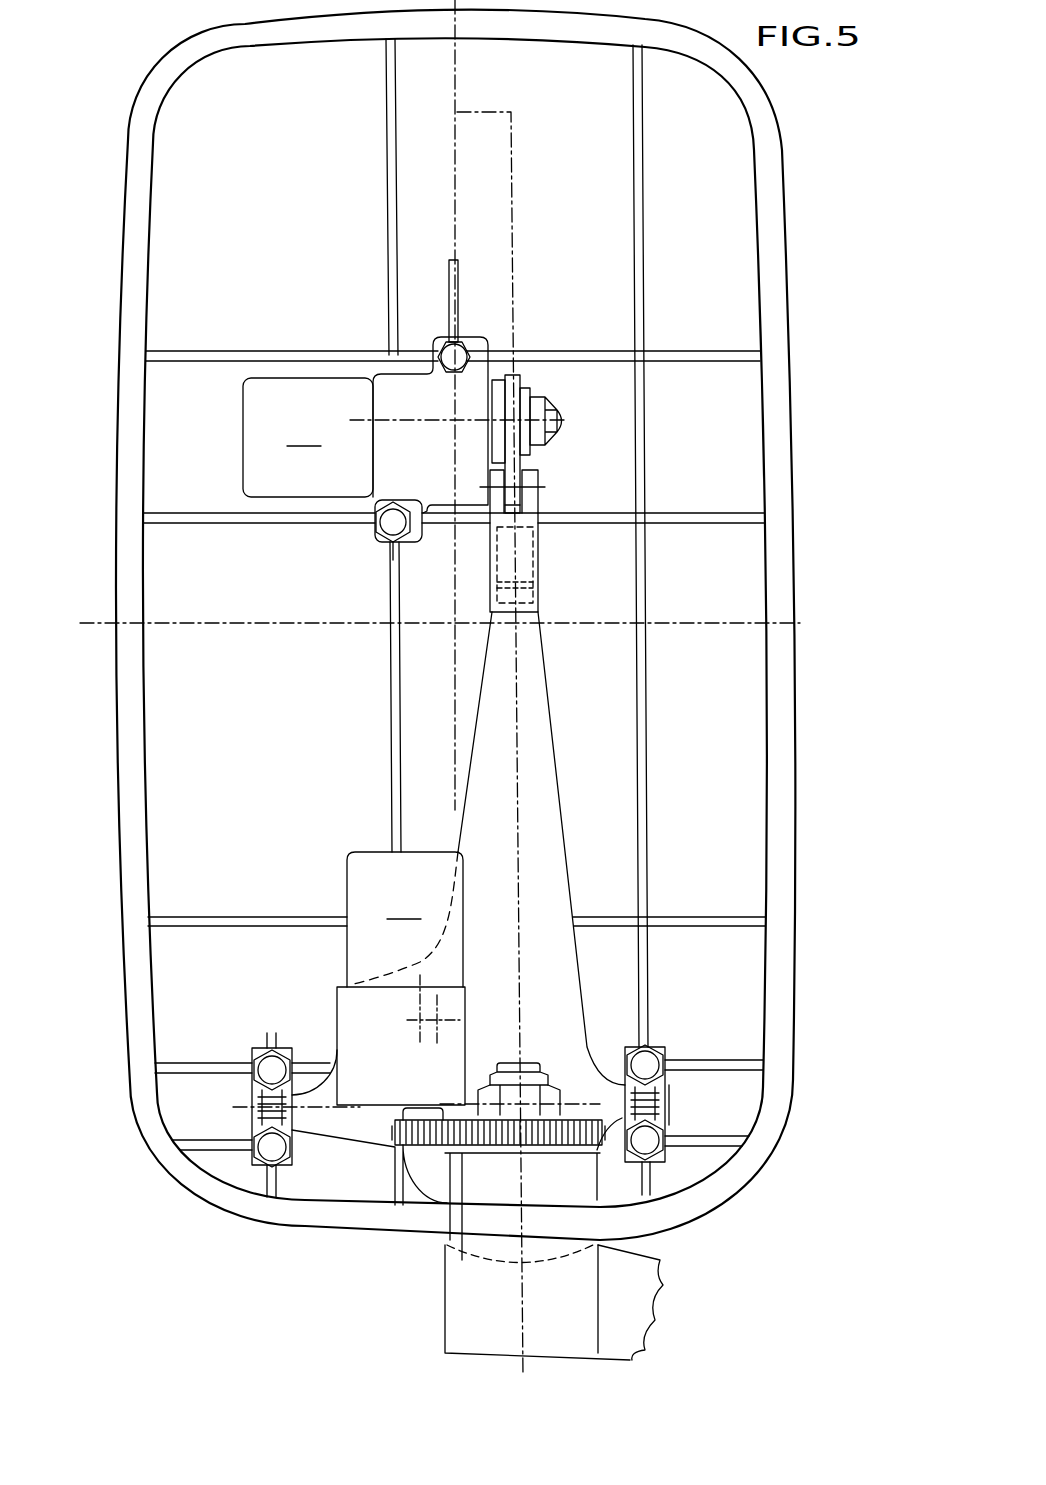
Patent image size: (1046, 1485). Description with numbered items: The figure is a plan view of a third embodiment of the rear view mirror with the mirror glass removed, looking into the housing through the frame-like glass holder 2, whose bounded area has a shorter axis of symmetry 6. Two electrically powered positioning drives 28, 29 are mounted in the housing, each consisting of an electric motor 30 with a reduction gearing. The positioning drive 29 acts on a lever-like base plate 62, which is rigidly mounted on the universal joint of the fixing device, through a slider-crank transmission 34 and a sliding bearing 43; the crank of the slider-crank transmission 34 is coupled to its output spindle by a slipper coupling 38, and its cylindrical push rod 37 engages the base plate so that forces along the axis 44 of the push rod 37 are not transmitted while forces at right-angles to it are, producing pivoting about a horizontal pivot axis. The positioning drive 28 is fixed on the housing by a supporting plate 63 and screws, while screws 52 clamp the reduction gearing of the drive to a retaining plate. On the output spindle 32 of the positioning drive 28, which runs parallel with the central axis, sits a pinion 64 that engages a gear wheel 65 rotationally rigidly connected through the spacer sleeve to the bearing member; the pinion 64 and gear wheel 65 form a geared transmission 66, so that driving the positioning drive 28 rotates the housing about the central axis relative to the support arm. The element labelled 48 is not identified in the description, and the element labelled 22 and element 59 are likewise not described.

The glass holder 2 is at (768, 243).
The axis of symmetry 6 is at (460, 22).
The gear wheel 22 is at (521, 1100).
The positioning drive 28 is at (345, 868).
The positioning drive 29 is at (330, 375).
The electric motor 30 is at (354, 667).
The output spindle 32 is at (430, 1108).
The slider-crank transmission 34 is at (541, 393).
The push rod 37 is at (500, 568).
The slipper coupling 38 is at (513, 390).
The sliding bearing 43 is at (542, 572).
The axis 44 is at (540, 545).
The clamp 48 is at (668, 1103).
The screws 52 is at (380, 530).
The bracket plate 59 is at (390, 392).
The base plate 62 is at (537, 723).
The supporting plate 63 is at (252, 1122).
The pinion 64 is at (395, 1128).
The gear wheel 65 is at (576, 1120).
The geared transmission 66 is at (477, 1082).